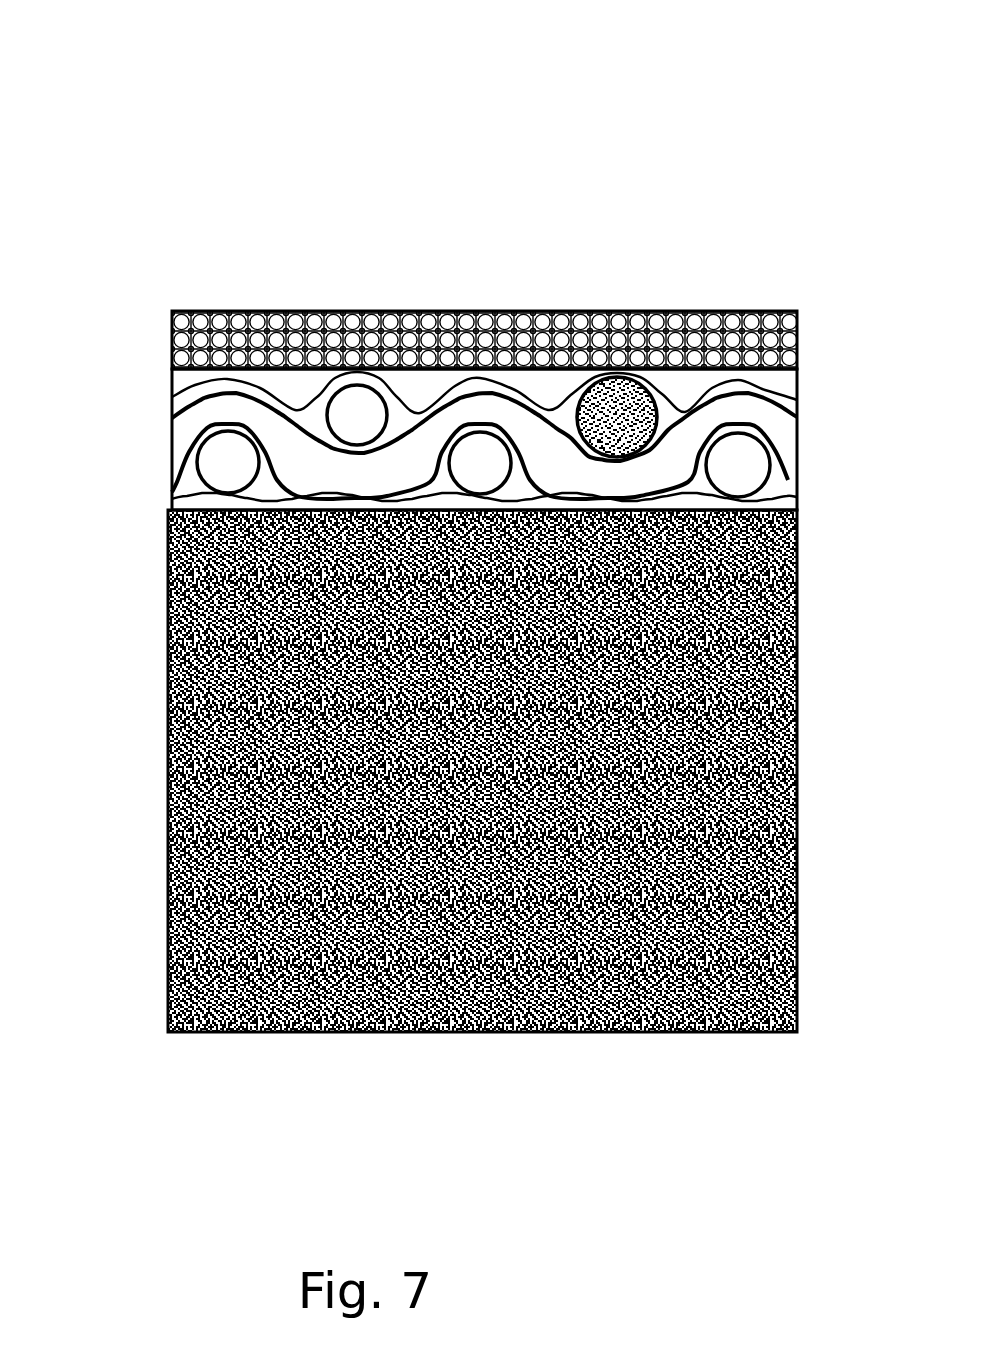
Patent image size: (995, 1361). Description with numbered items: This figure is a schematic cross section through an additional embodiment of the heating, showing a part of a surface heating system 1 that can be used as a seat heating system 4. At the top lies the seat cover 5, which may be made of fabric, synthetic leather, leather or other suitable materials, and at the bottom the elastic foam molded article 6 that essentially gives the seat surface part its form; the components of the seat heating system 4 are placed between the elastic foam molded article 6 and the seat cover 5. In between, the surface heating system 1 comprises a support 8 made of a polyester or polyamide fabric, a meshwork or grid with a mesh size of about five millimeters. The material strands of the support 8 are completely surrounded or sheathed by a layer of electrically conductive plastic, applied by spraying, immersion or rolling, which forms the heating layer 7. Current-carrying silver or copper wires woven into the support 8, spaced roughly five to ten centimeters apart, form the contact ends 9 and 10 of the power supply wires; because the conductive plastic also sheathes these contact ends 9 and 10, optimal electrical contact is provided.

The surface heating system 1 is at (825, 373).
The seat heating system 4 is at (510, 150).
The seat cover 5 is at (488, 311).
The elastic foam molded article 6 is at (733, 1032).
The heating layer 7 is at (212, 466).
The support 8 is at (400, 412).
The contact end 9 is at (617, 378).
The contact end 10 is at (719, 317).